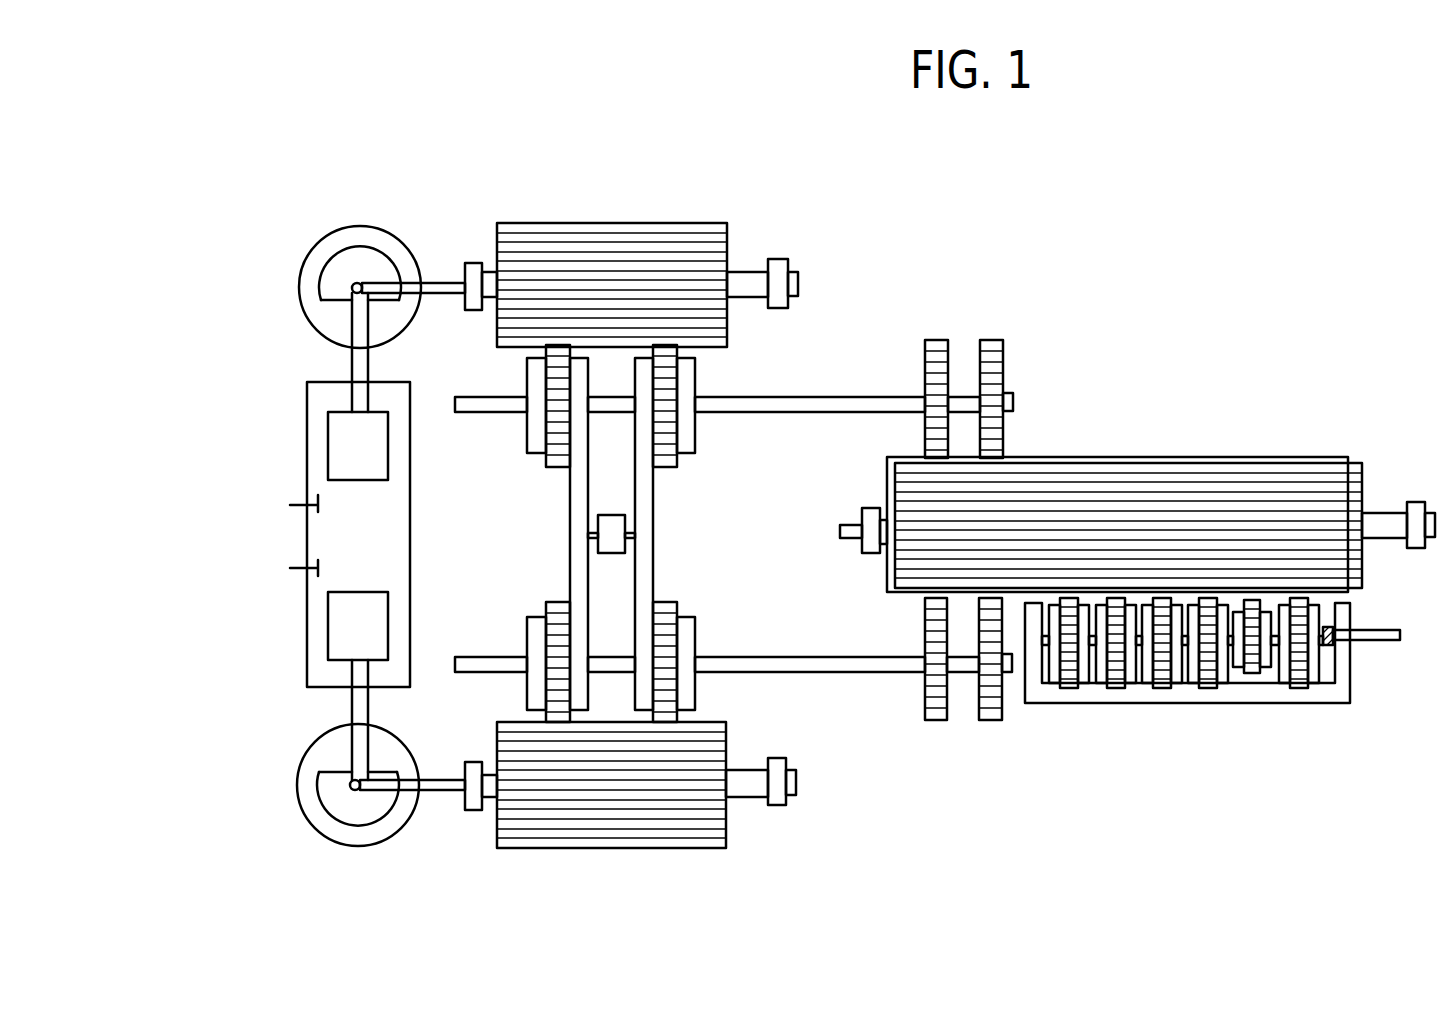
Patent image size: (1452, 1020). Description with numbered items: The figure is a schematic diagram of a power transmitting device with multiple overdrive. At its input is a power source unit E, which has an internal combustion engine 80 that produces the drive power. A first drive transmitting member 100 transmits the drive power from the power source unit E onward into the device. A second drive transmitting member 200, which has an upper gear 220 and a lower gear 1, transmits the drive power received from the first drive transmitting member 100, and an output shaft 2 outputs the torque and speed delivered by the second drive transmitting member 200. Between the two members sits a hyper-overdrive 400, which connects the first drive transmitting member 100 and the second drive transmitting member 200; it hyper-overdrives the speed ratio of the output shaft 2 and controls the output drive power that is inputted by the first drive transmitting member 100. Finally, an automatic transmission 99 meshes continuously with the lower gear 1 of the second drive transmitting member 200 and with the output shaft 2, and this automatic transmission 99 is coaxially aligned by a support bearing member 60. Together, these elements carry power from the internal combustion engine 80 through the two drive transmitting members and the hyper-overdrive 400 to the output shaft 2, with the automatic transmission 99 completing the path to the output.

The lower gear 1 is at (1035, 463).
The output shaft 2 is at (1378, 634).
The support bearing member 60 is at (1333, 652).
The internal combustion engine 80 is at (318, 807).
The automatic transmission 99 is at (1067, 727).
The first drive transmitting member 100 is at (722, 190).
The second drive transmitting member 200 is at (1133, 305).
The upper gear 220 is at (992, 358).
The hyper-overdrive 400 is at (686, 585).
The power source unit E is at (265, 455).